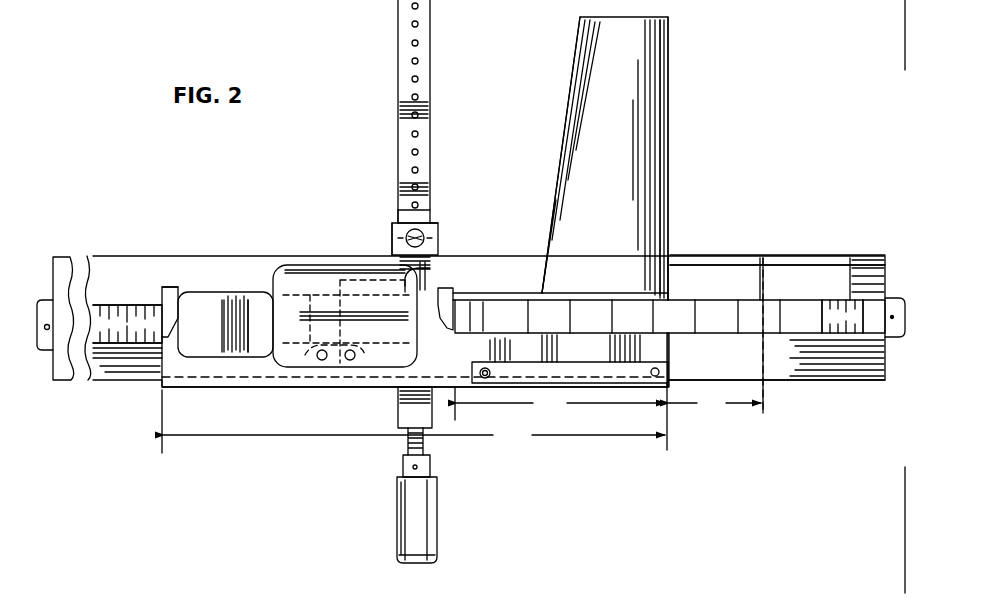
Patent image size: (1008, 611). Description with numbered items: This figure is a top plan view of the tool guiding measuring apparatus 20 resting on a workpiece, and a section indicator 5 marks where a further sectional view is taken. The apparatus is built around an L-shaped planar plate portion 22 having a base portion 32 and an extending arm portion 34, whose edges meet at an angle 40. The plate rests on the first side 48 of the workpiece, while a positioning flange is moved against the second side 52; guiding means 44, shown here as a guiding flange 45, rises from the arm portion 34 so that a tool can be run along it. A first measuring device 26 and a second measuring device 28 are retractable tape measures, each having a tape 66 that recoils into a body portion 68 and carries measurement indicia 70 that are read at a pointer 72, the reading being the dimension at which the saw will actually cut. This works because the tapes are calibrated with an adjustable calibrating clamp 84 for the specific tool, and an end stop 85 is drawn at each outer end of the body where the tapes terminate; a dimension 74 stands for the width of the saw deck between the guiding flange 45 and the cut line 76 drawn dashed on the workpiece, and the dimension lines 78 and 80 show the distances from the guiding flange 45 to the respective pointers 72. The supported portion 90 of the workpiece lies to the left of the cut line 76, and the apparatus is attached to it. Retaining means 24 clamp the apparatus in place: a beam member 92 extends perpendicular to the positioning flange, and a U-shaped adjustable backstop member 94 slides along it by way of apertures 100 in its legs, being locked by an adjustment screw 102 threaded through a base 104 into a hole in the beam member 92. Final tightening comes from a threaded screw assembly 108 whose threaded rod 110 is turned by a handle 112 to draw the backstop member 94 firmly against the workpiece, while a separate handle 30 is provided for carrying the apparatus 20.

The section line 5 is at (913, 570).
The tool guiding measuring apparatus 20 is at (647, 463).
The planar plate portion 22 is at (627, 138).
The retaining means 24 is at (440, 472).
The first measuring device 26 is at (337, 285).
The second measuring device 28 is at (205, 288).
The handle 30 is at (298, 364).
The base portion 32 is at (520, 296).
The arm portion 34 is at (567, 118).
The angle 40 is at (662, 349).
The guiding means 44 is at (672, 128).
The guiding flange 45 is at (670, 160).
The first side of the workpiece 48 is at (711, 295).
The second side of the workpiece 52 is at (830, 381).
The tape 66 is at (120, 344).
The body portion 68 is at (257, 300).
The measurement indicia 70 is at (117, 312).
The pointer 72 is at (158, 325).
The dimension 74 is at (715, 403).
The cut line 76 is at (758, 280).
The dimension line 78 is at (560, 404).
The dimension line 80 is at (414, 418).
The adjustable calibrating clamp 84 is at (893, 338).
The end stop 85 is at (62, 335).
The portion of the workpiece 90 is at (467, 294).
The beam member 92 is at (407, 53).
The adjustable backstop member 94 is at (438, 214).
The apertures 100 is at (407, 213).
The adjustment screw 102 is at (393, 227).
The base 104 is at (393, 242).
The threaded screw assembly 108 is at (428, 435).
The threaded rod 110 is at (406, 445).
The handle 112 is at (403, 527).